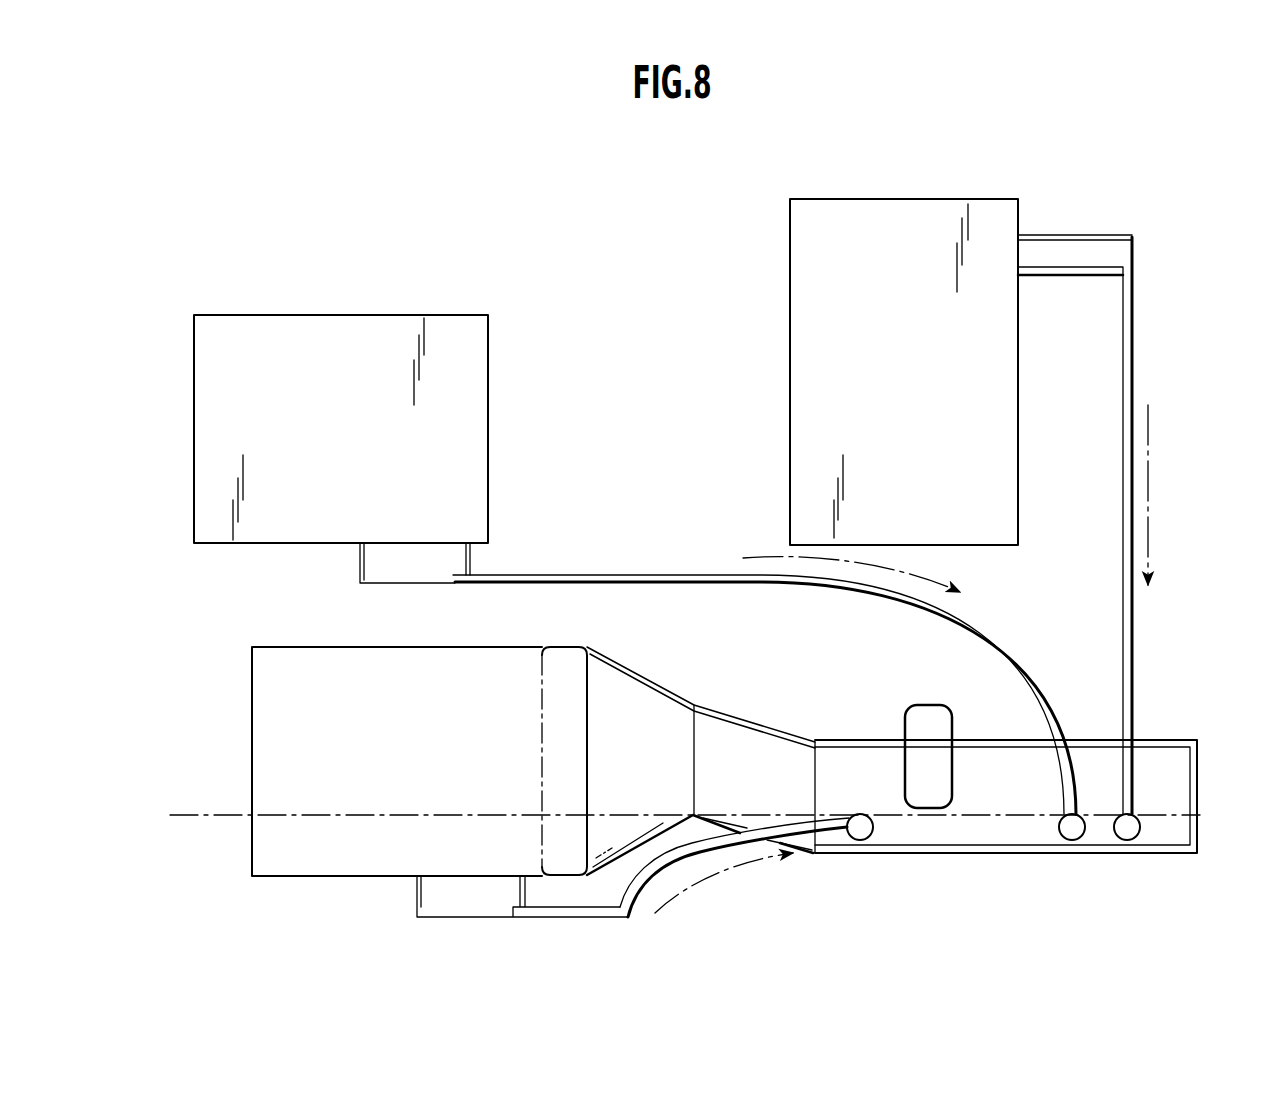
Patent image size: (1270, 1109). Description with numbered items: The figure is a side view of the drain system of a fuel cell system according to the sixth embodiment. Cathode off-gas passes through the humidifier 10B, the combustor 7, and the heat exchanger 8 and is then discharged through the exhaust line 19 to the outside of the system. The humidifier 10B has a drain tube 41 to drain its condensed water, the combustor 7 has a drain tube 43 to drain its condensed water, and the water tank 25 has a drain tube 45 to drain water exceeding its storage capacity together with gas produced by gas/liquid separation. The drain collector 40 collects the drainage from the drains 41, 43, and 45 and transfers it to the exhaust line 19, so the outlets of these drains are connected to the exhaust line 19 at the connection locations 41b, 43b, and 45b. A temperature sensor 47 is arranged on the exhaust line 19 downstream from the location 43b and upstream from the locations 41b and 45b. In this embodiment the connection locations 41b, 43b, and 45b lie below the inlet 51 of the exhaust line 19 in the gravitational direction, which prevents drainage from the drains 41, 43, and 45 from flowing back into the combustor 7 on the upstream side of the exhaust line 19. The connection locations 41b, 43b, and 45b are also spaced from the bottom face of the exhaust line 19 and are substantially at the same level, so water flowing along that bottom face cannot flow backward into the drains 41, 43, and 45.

The humidifier 10B is at (345, 345).
The water tank 25 is at (820, 372).
The drain collector 40 is at (1115, 185).
The drain tube 41 is at (627, 575).
The drain tube 45 is at (1128, 365).
The combustor 7 is at (340, 855).
The heat exchanger 8 is at (570, 670).
The inlet of the exhaust line 51 is at (700, 740).
The drain tube 43 is at (780, 830).
The temperature sensor 47 is at (920, 715).
The exhaust line 19 is at (963, 845).
The connection location 43b is at (860, 848).
The connection location 41b is at (1072, 848).
The connection location 45b is at (1127, 848).